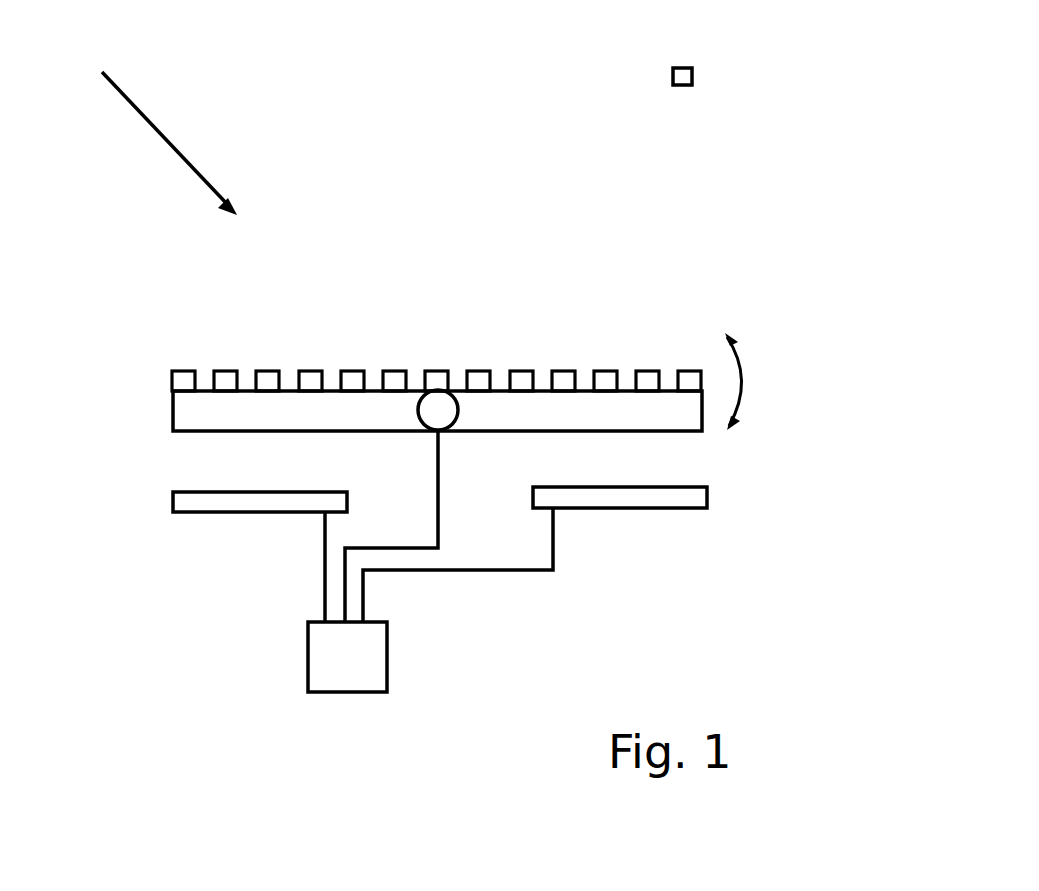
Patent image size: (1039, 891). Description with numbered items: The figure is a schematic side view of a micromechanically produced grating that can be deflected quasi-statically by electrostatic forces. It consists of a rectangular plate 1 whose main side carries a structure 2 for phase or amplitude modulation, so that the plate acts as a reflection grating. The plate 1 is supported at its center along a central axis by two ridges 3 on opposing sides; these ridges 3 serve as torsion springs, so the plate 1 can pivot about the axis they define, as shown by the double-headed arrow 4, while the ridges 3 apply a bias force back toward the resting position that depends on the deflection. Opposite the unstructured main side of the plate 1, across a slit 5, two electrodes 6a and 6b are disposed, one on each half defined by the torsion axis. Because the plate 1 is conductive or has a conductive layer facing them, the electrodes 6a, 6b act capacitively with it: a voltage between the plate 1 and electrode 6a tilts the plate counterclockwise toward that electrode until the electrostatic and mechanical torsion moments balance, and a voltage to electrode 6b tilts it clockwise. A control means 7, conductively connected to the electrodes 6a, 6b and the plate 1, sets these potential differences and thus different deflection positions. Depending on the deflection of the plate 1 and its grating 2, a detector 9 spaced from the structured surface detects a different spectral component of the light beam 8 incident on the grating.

The rectangular plate 1 is at (548, 398).
The structure for phase or amplitude modulation 2 is at (180, 388).
The ridges 3 is at (418, 393).
The double-headed arrow 4 is at (745, 372).
The slit 5 is at (704, 462).
The electrode 6a is at (303, 500).
The electrode 6b is at (608, 500).
The control means 7 is at (305, 660).
The light beam 8 is at (163, 138).
The detector 9 is at (683, 68).